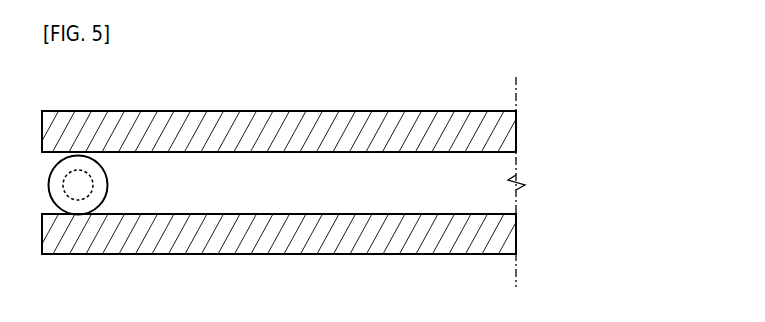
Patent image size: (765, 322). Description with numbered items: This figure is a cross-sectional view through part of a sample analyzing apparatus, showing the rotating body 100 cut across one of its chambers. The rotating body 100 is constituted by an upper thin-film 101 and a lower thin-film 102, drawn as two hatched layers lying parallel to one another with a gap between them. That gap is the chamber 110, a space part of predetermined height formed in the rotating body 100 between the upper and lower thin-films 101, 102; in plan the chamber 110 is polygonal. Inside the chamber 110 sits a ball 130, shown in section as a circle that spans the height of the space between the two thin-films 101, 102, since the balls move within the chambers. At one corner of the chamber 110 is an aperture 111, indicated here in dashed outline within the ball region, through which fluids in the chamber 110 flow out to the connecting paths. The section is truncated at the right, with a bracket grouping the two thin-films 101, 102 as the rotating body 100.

The rotating body 100 is at (366, 182).
The upper thin-film 101 is at (512, 131).
The lower thin-film 102 is at (330, 234).
The chamber 110 is at (283, 163).
The ball 130 is at (103, 187).
The aperture 111 is at (80, 183).